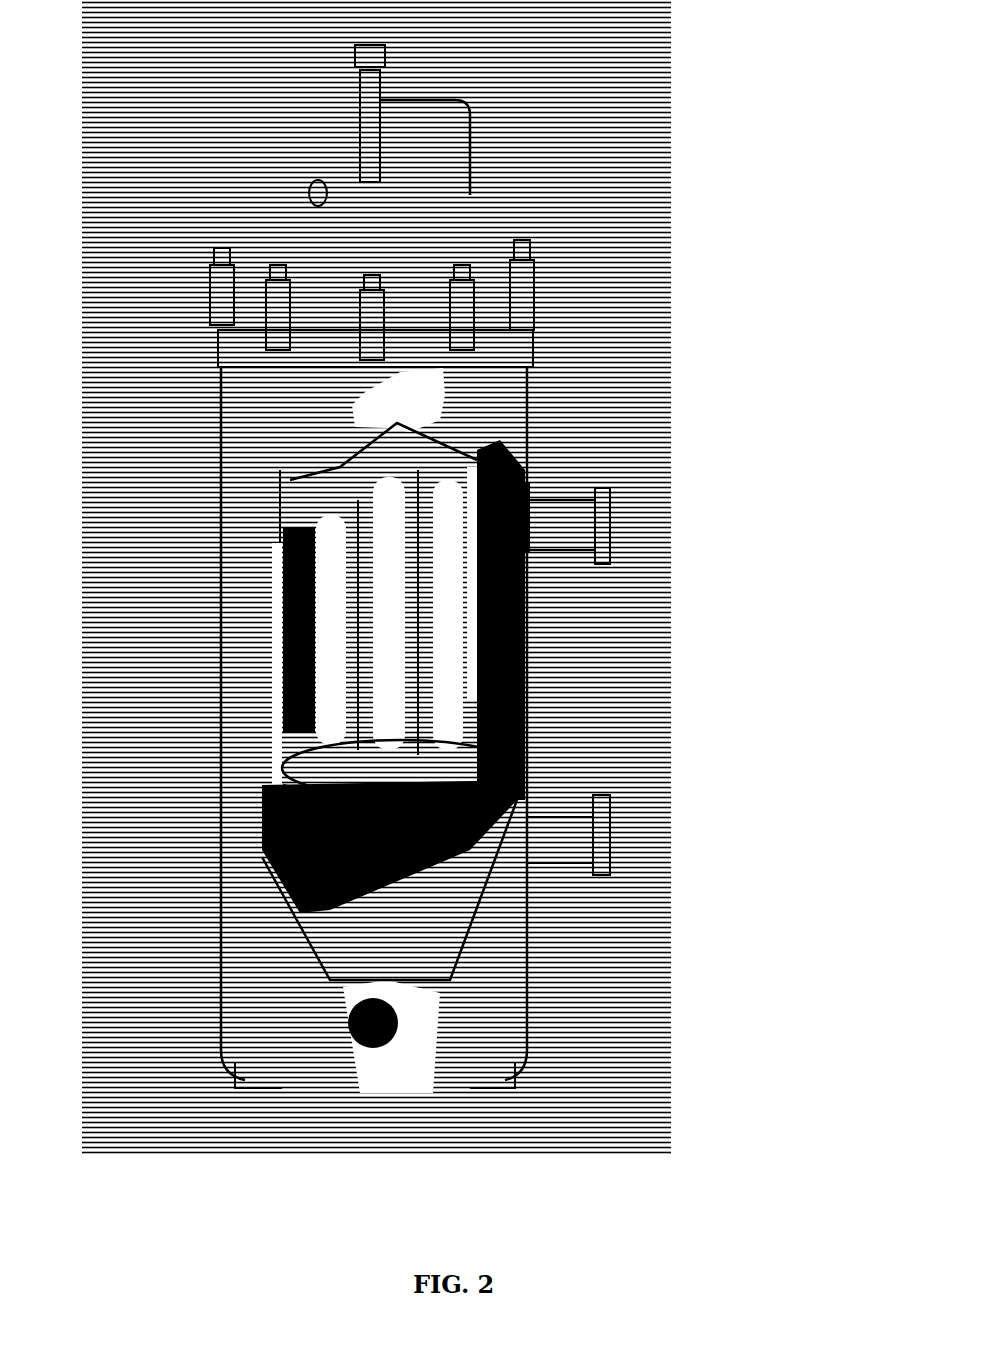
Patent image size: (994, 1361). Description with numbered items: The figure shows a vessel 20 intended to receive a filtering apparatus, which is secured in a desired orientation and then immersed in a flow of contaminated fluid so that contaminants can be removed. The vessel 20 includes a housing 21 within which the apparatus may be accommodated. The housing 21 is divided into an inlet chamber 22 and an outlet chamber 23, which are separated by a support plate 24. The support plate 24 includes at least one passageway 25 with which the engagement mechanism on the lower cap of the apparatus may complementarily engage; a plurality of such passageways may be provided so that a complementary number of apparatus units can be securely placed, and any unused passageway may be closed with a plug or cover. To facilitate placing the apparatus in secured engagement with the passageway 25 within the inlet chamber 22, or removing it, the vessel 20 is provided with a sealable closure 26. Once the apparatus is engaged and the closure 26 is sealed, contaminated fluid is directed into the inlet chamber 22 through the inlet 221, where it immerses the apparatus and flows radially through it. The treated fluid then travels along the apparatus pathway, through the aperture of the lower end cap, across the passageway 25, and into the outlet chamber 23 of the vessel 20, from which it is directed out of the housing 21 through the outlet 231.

The vessel 20 is at (607, 157).
The housing 21 is at (215, 485).
The inlet chamber 22 is at (535, 652).
The inlet 221 is at (600, 500).
The outlet chamber 23 is at (343, 933).
The outlet 231 is at (607, 852).
The support plate 24 is at (507, 740).
The passageway 25 is at (527, 781).
The sealable closure 26 is at (236, 183).